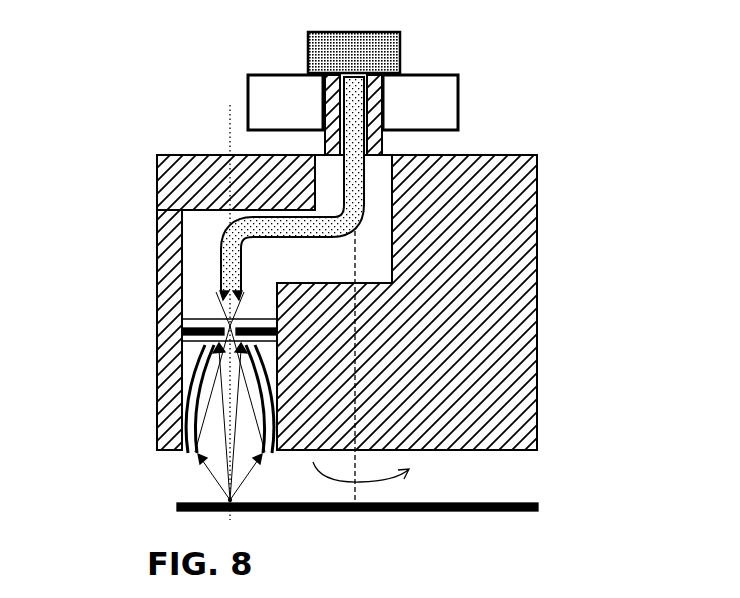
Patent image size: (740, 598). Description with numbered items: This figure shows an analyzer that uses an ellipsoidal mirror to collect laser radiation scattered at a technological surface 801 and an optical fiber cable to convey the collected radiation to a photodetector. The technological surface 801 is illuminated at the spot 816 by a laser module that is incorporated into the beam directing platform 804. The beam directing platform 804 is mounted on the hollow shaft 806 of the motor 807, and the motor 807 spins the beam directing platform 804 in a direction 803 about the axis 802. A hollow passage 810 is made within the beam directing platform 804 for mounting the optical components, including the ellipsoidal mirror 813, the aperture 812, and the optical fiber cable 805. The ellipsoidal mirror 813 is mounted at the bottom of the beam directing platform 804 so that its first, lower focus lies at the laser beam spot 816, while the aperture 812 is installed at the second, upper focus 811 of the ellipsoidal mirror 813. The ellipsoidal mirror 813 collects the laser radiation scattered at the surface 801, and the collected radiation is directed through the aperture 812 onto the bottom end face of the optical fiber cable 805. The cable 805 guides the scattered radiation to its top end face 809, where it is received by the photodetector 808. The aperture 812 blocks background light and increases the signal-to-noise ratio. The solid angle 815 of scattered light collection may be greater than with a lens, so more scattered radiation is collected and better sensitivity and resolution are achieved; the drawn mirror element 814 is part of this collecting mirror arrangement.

The technological surface 801 is at (541, 507).
The axis 802 is at (360, 262).
The direction 803 is at (412, 466).
The beam directing platform 804 is at (155, 178).
The optical fiber cable 805 is at (370, 196).
The hollow shaft 806 is at (388, 137).
The motor 807 is at (462, 100).
The photodetector 808 is at (404, 50).
The top end face 809 is at (305, 57).
The hollow passage 810 is at (200, 226).
The second (upper) focus 811 is at (162, 264).
The aperture 812 is at (215, 321).
The ellipsoidal mirror 813 is at (197, 363).
The inner mirror 814 is at (213, 422).
The solid angle 815 is at (203, 470).
The spot 816 is at (225, 500).